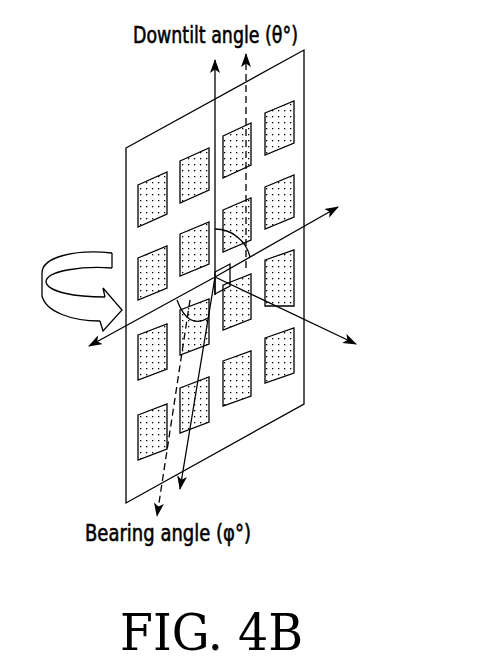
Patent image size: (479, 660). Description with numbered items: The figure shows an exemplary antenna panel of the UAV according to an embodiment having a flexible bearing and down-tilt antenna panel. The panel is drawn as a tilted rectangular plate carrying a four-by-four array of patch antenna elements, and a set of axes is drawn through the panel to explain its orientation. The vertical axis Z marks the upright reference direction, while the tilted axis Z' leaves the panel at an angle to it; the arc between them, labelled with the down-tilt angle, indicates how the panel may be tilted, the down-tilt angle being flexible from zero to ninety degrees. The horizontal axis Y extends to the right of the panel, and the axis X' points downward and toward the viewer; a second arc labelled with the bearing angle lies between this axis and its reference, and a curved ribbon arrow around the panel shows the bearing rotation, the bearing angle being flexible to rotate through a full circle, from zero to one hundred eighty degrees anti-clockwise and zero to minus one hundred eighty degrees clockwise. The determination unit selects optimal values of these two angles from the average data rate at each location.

The Z axis (vertical axis of antenna panel) Z is at (203, 176).
The Z' axis (tilted axis) Z' is at (286, 228).
The Y axis Y is at (286, 322).
The X' axis (rotated bearing axis) X' is at (197, 392).